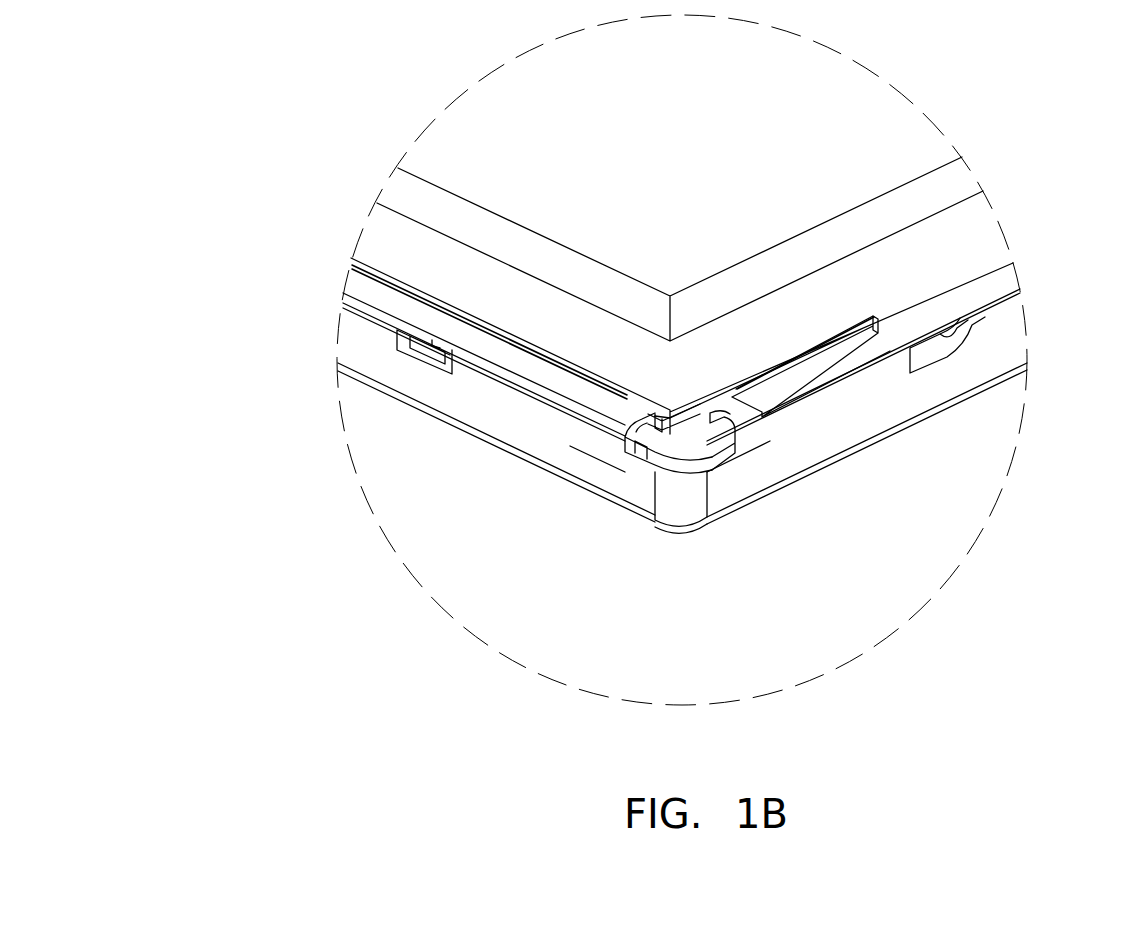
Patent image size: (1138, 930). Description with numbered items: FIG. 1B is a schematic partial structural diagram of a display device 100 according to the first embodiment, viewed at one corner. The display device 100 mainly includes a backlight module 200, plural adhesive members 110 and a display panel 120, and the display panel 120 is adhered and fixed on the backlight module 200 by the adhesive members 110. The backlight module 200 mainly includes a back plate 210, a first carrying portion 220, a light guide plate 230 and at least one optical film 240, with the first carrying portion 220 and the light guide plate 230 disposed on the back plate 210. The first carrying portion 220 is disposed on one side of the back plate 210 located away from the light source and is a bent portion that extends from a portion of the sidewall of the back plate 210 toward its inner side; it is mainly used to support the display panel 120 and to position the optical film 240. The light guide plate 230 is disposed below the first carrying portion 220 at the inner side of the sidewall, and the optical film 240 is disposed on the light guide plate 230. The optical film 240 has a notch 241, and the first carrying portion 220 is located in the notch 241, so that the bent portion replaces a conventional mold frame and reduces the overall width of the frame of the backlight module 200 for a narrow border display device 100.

The display device 100 is at (262, 90).
The adhesive members 110 is at (360, 283).
The display panel 120 is at (960, 181).
The backlight module 200 is at (729, 447).
The back plate 210 is at (900, 407).
The first carrying portion 220 is at (738, 415).
The light guide plate 230 is at (643, 440).
The optical film 240 is at (982, 240).
The notch 241 is at (783, 357).